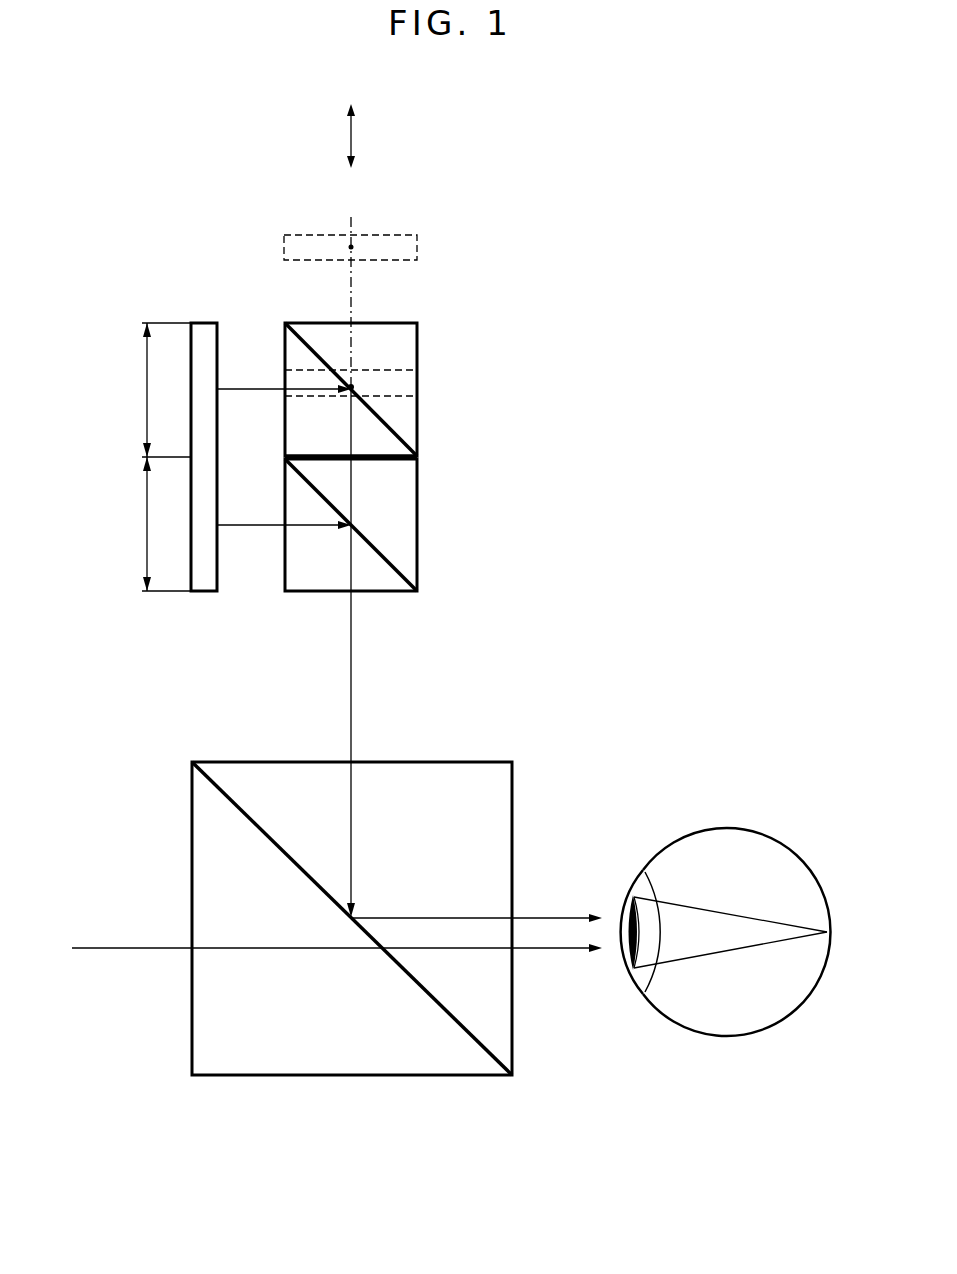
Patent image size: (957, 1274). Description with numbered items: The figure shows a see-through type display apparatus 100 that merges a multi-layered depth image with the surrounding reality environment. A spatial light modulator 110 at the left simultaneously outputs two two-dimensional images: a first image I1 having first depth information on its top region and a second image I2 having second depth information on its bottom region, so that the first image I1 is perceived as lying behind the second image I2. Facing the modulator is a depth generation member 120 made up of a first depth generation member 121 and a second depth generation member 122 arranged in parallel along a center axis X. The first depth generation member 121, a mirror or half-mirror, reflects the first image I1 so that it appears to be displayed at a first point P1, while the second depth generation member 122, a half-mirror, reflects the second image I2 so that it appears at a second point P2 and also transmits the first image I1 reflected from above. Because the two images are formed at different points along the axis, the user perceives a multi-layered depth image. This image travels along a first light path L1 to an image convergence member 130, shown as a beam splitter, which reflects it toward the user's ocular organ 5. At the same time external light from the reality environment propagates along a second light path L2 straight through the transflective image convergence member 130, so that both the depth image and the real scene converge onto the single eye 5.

The see-through type display apparatus 100 is at (672, 275).
The spatial light modulator 110 is at (203, 322).
The depth generation member 120 is at (418, 457).
The first depth generation member 121 is at (413, 339).
The second depth generation member 122 is at (386, 525).
The image convergence member 130 is at (336, 1063).
The ocular organ 5 is at (727, 830).
The first point P1 is at (351, 247).
The second point P2 is at (351, 387).
The first light path L1 is at (351, 688).
The second light path L2 is at (126, 947).
The first image I1 is at (154, 390).
The second image I2 is at (154, 524).
The center axis X is at (335, 136).